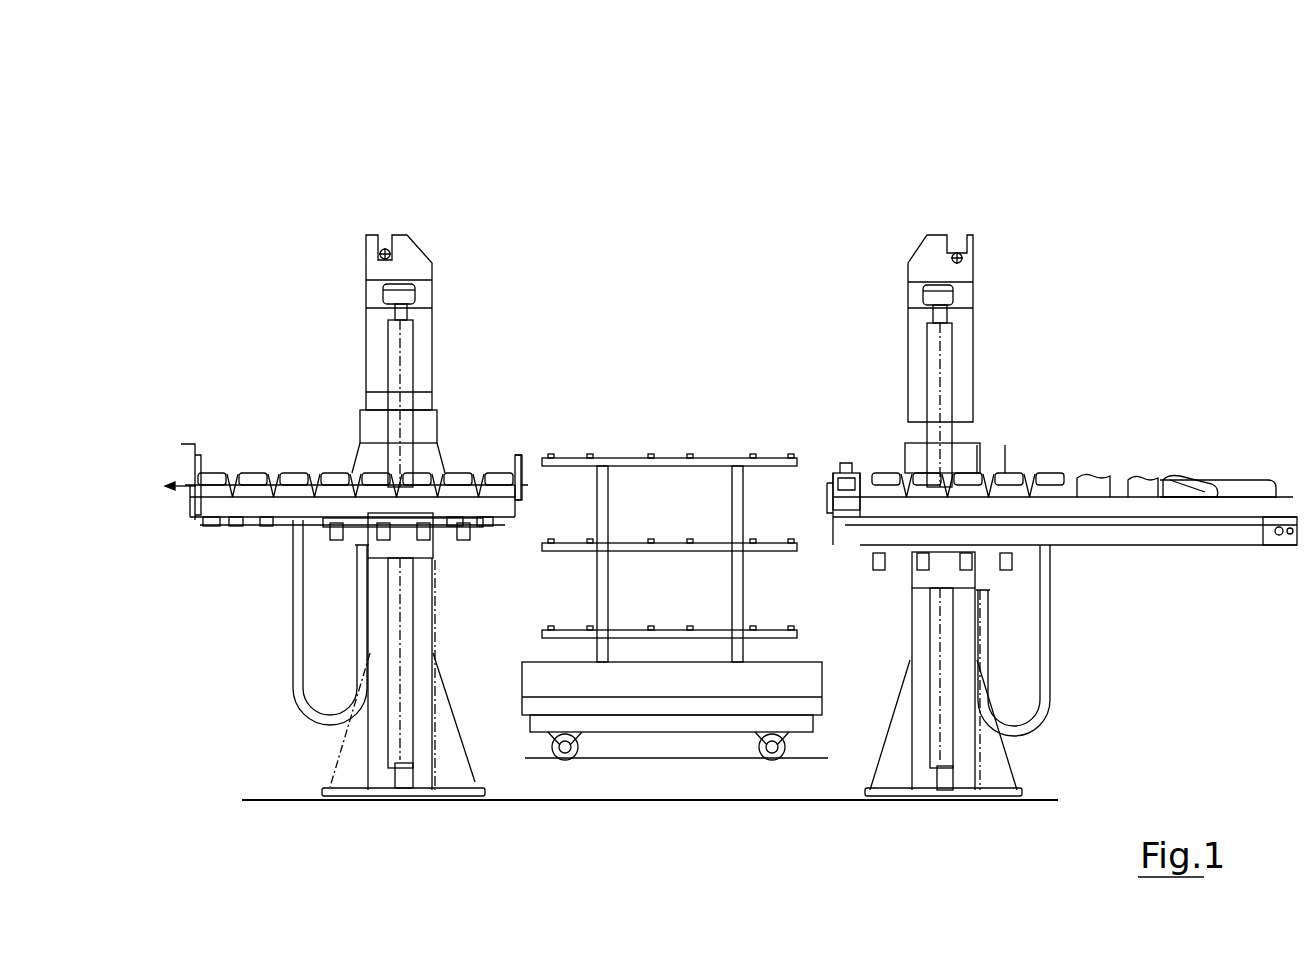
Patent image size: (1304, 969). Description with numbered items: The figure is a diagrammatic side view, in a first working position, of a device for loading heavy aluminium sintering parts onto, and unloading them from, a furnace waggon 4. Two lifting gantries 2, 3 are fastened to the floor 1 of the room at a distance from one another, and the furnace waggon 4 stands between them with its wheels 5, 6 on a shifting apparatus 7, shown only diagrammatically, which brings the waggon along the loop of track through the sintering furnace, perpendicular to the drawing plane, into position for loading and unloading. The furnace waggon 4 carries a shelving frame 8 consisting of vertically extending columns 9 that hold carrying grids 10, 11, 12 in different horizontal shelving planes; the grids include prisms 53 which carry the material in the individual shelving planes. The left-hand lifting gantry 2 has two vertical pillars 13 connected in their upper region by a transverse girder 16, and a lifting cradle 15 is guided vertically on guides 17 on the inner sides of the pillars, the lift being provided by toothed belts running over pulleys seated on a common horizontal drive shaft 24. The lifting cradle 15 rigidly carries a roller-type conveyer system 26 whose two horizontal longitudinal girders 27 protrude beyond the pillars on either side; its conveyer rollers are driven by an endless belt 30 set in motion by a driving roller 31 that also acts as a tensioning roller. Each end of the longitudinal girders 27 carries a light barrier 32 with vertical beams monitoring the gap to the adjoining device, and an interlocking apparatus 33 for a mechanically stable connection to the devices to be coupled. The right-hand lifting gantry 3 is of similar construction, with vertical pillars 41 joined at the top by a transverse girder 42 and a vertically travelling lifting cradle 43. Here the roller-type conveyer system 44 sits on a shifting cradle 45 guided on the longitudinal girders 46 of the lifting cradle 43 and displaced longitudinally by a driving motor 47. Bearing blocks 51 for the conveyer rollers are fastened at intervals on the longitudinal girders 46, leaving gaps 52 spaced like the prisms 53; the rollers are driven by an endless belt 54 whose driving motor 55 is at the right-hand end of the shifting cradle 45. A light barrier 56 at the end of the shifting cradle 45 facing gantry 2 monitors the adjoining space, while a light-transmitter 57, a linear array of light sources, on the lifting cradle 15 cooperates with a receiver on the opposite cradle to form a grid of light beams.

The floor 1 is at (262, 800).
The lifting gantry 2 is at (273, 197).
The lifting gantry 3 is at (1021, 239).
The furnace waggon 4 is at (678, 306).
The wheel 5 is at (560, 761).
The wheel 6 is at (777, 761).
The shifting apparatus 7 is at (700, 760).
The shelving frame 8 is at (708, 468).
The column 9 is at (602, 592).
The carrying grid 10 is at (662, 628).
The carrying grid 11 is at (662, 541).
The carrying grid 12 is at (662, 456).
The pillar 13 is at (380, 742).
The lifting cradle 15 is at (436, 505).
The transverse girder 16 is at (410, 288).
The guide 17 is at (400, 358).
The drive shaft 24 is at (380, 232).
The roller-type conveyer system 26 is at (272, 473).
The longitudinal girder 27 is at (251, 505).
The endless belt 30 is at (230, 472).
The driving roller 31 is at (312, 482).
The light barrier 32 is at (193, 443).
The interlocking apparatus 33 is at (225, 525).
The pillar 41 is at (961, 766).
The transverse girder 42 is at (920, 288).
The lifting cradle 43 is at (1143, 472).
The roller-type conveyer system 44 is at (1093, 472).
The shifting cradle 45 is at (1098, 500).
The longitudinal girder 46 is at (1138, 548).
The driving motor 47 is at (840, 470).
The bearing block 51 is at (888, 472).
The gap 52 is at (985, 472).
The prism 53 is at (591, 454).
The endless belt 54 is at (1187, 472).
The driving motor 55 is at (1221, 475).
The light barrier 56 is at (823, 470).
The light-transmitter 57 is at (523, 492).